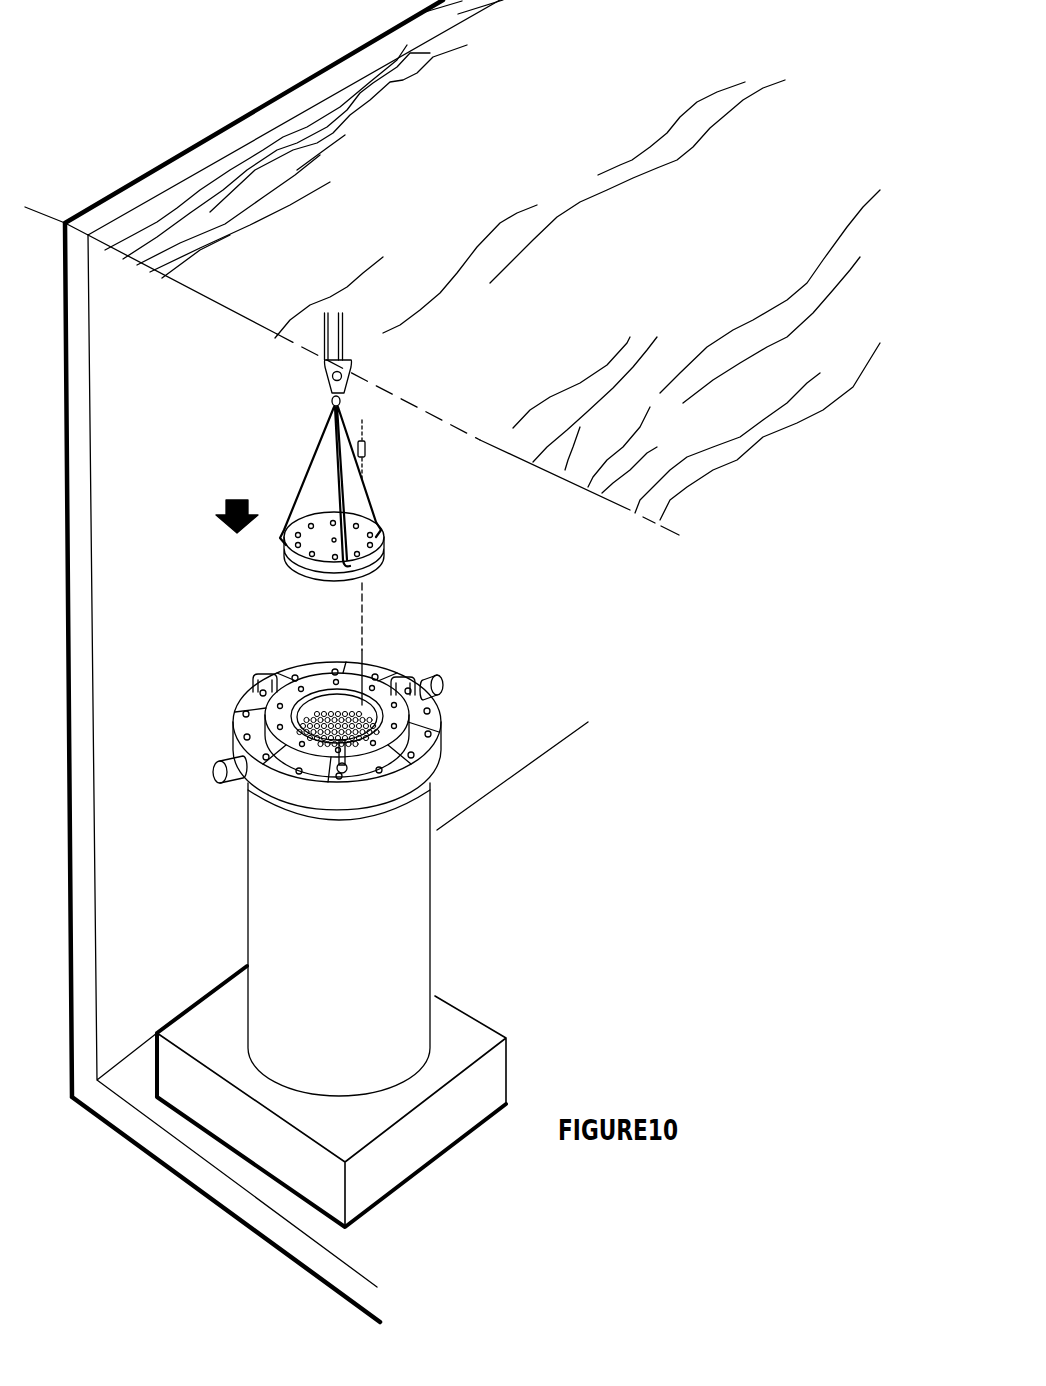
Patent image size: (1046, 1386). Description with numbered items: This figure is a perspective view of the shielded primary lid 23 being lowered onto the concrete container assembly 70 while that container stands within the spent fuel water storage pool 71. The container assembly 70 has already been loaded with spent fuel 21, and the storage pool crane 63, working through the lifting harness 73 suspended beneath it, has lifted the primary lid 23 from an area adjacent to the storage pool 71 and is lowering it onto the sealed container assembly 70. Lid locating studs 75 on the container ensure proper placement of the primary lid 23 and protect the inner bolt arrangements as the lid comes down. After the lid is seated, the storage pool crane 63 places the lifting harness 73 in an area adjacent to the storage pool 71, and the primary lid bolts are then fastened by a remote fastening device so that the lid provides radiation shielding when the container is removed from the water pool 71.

The spent fuel 21 is at (365, 714).
The shielded primary lid 23 is at (381, 548).
The storage pool crane 63 is at (323, 372).
The container assembly 70 is at (431, 919).
The storage pool 71 is at (323, 68).
The lifting harness 73 is at (307, 475).
The lid locating studs 75 is at (372, 682).